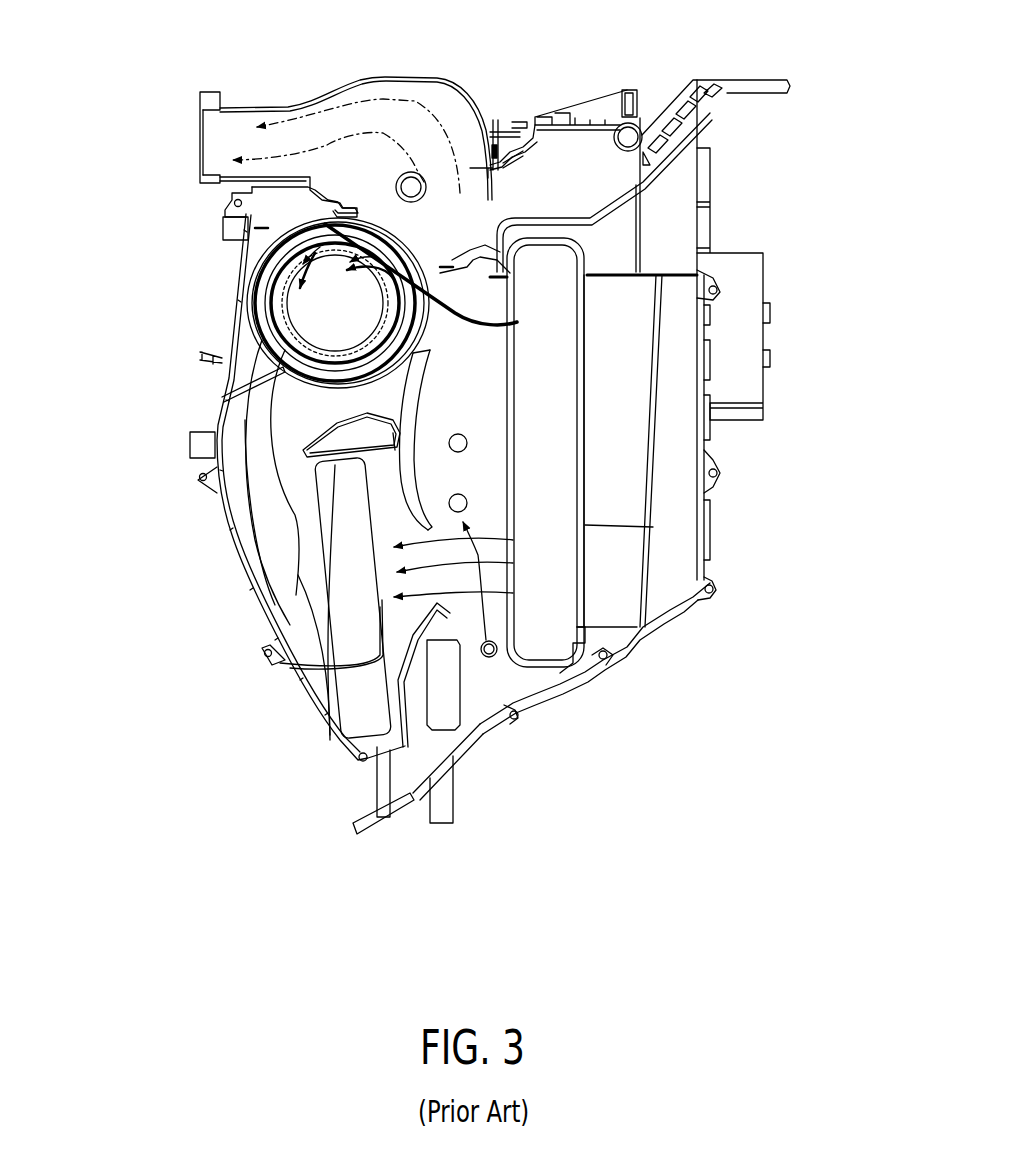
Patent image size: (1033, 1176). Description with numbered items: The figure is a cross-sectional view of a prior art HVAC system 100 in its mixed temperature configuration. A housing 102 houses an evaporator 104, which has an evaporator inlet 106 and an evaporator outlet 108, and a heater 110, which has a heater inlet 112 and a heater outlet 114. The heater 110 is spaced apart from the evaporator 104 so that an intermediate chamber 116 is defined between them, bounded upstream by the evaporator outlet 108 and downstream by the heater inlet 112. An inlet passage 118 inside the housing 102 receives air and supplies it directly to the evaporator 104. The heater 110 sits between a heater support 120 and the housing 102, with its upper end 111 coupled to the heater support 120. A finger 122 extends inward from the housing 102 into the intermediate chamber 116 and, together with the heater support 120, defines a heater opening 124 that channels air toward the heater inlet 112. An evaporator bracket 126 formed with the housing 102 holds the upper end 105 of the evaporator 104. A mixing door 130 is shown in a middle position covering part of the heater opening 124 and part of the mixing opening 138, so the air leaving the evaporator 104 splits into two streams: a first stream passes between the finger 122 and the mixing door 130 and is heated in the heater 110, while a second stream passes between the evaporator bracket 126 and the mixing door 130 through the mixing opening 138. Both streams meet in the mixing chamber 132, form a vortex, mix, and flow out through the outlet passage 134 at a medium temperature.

The HVAC system 100 is at (178, 44).
The housing 102 is at (230, 540).
The evaporator 104 is at (567, 597).
The upper end of the evaporator 105 is at (547, 266).
The evaporator inlet 106 is at (575, 455).
The evaporator outlet 108 is at (510, 470).
The heater 110 is at (343, 693).
The upper end of the heater 111 is at (346, 499).
The heater inlet 112 is at (263, 658).
The heater outlet 114 is at (323, 596).
The intermediate chamber 116 is at (490, 655).
The inlet passage 118 is at (634, 390).
The heater support 120 is at (337, 433).
The finger 122 is at (433, 623).
The heater opening 124 is at (388, 560).
The evaporator bracket 126 is at (484, 170).
The mixing door 130 is at (420, 375).
The mixing chamber 132 is at (296, 290).
The outlet passage 134 is at (332, 158).
The mixing opening 138 is at (433, 331).